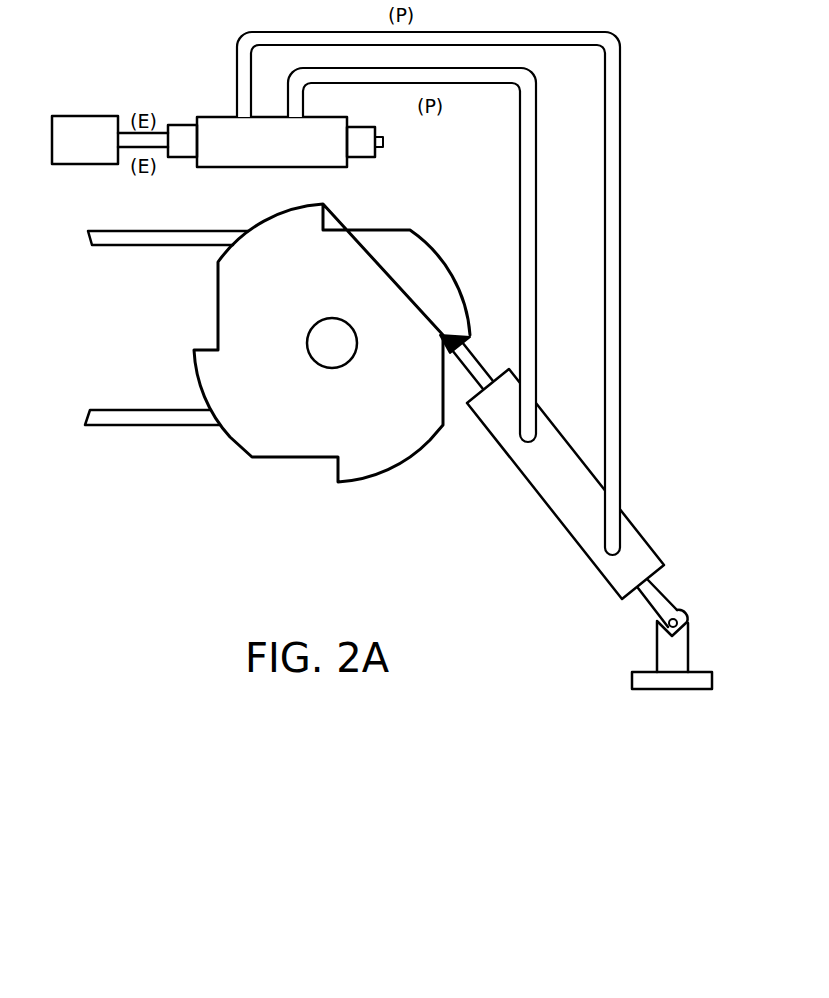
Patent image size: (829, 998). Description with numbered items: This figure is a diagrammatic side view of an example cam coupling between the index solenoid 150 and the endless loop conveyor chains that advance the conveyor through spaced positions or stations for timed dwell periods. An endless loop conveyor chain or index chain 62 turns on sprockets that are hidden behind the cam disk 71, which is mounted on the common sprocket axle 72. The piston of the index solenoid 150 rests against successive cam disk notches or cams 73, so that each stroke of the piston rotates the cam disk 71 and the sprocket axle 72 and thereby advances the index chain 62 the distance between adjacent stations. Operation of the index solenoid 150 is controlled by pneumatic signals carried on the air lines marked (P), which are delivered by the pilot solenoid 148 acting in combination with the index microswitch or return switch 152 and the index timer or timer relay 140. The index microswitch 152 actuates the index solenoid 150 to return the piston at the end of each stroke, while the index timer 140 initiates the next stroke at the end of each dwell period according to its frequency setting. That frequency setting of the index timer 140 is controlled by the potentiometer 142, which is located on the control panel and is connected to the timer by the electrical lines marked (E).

The potentiometer 142 is at (76, 116).
The pilot solenoid 148 is at (227, 93).
The index timer 140 is at (184, 158).
The index microswitch 152 is at (384, 143).
The cam disk 71 is at (377, 475).
The sprocket axle 72 is at (334, 319).
The index chain 62 is at (177, 247).
The cam disk notch 73 is at (455, 334).
The index solenoid 150 is at (562, 530).